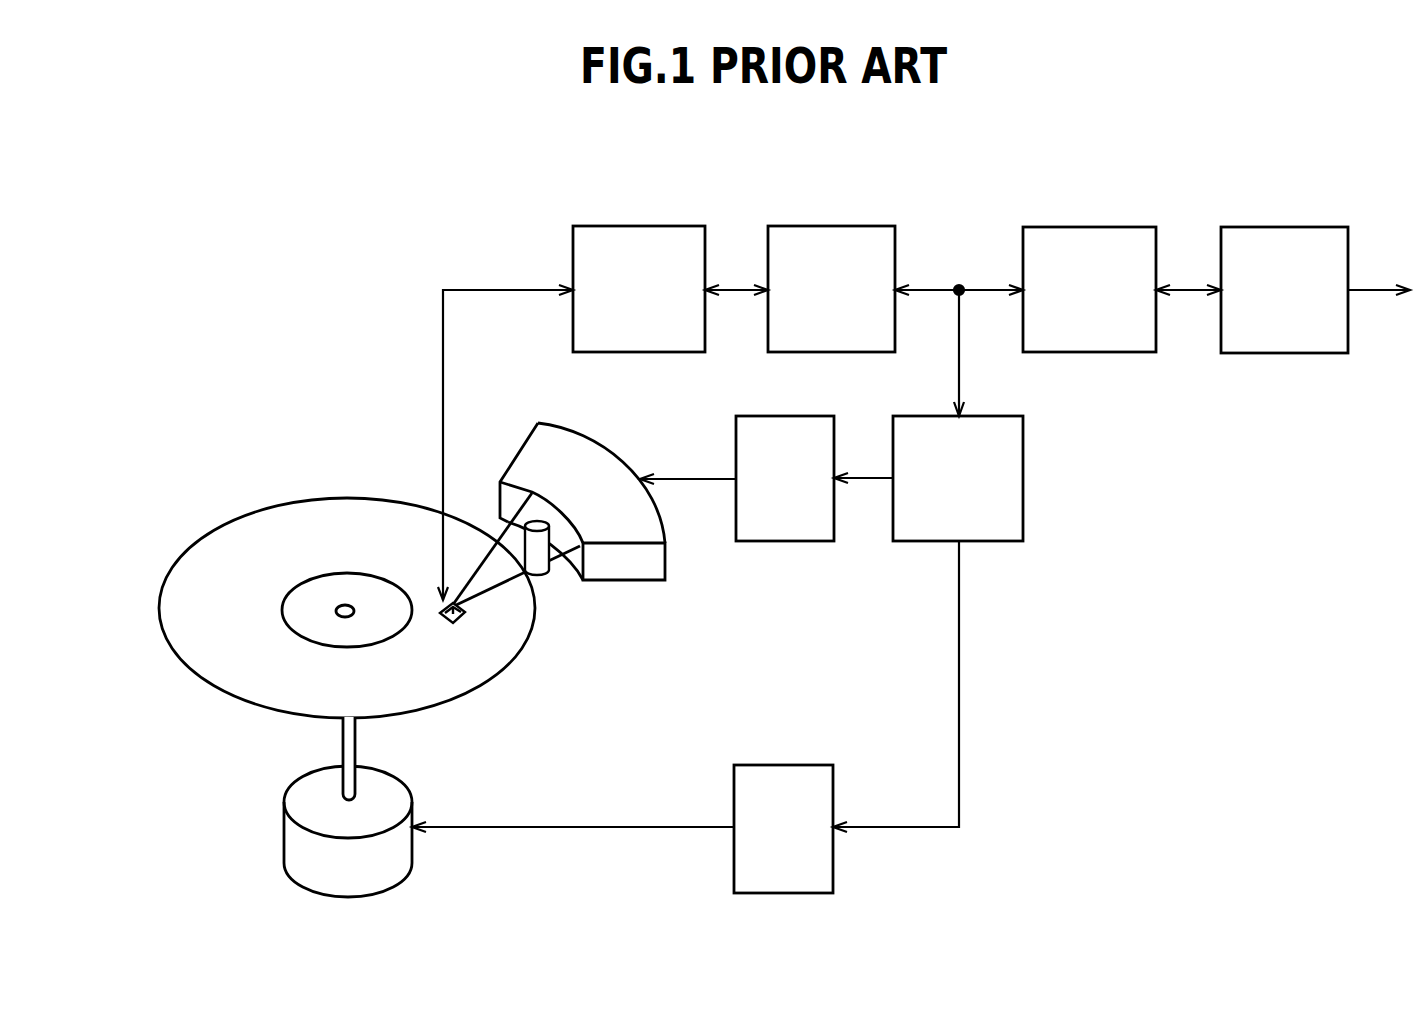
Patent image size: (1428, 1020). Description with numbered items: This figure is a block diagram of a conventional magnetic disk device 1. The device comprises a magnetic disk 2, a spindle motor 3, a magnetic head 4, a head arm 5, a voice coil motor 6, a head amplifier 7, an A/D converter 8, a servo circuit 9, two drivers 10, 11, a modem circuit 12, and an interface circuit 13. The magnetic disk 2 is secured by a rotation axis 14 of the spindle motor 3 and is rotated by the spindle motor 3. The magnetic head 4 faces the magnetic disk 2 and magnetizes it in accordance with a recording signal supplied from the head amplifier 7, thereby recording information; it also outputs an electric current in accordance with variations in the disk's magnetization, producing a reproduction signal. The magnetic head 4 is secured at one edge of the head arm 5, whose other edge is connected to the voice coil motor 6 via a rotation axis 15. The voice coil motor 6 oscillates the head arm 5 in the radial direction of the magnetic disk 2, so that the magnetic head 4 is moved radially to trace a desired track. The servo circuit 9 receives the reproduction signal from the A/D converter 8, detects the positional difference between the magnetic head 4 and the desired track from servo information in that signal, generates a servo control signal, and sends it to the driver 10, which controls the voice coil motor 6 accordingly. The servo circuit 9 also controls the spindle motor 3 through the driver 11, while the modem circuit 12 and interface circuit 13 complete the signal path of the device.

The magnetic disk device 1 is at (367, 157).
The magnetic disk 2 is at (262, 530).
The spindle motor 3 is at (290, 837).
The magnetic head 4 is at (465, 620).
The head arm 5 is at (500, 572).
The voice coil motor (VCM) 6 is at (636, 567).
The head amplifier 7 is at (650, 232).
The A/D converter 8 is at (840, 232).
The servo circuit 9 is at (1023, 445).
The driver 10 is at (735, 442).
The driver 11 is at (833, 780).
The modem circuit 12 is at (1099, 227).
The interface circuit 13 is at (1297, 237).
The rotation axis 14 is at (352, 752).
The rotation axis 15 is at (537, 521).